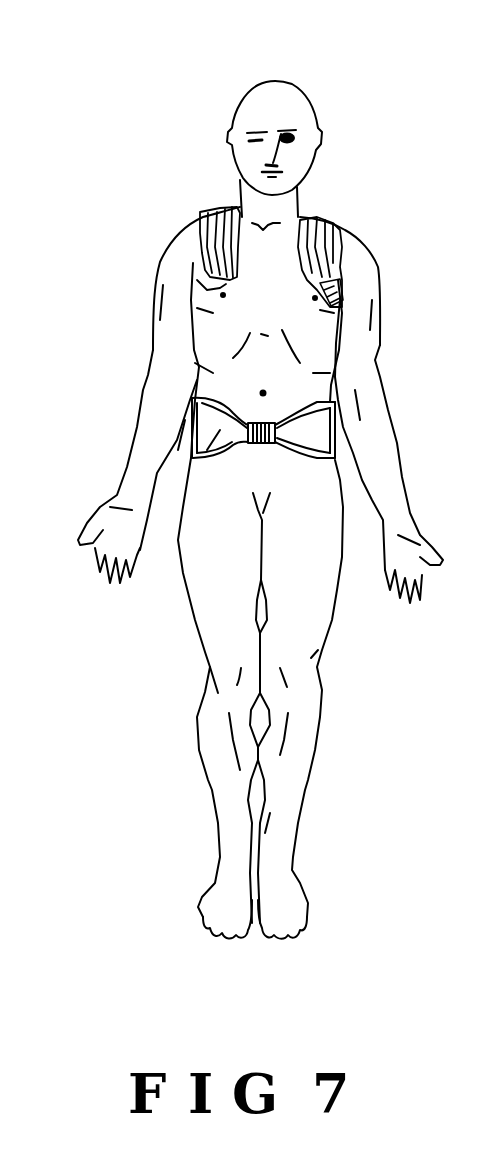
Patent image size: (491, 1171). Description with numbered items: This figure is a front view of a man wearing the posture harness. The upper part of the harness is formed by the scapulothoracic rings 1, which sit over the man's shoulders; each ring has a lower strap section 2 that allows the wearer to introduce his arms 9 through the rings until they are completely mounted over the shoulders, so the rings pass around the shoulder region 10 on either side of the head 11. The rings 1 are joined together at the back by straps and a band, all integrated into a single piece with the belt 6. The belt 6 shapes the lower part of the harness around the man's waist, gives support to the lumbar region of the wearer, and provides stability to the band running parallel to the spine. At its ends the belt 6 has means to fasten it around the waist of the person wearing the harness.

The scapulothoracic rings 1 is at (300, 237).
The lower strap section 2 is at (340, 283).
The belt 6 is at (207, 453).
The user's arms 9 is at (157, 313).
The shoulder straps 10 is at (237, 210).
The user's head 11 is at (290, 104).